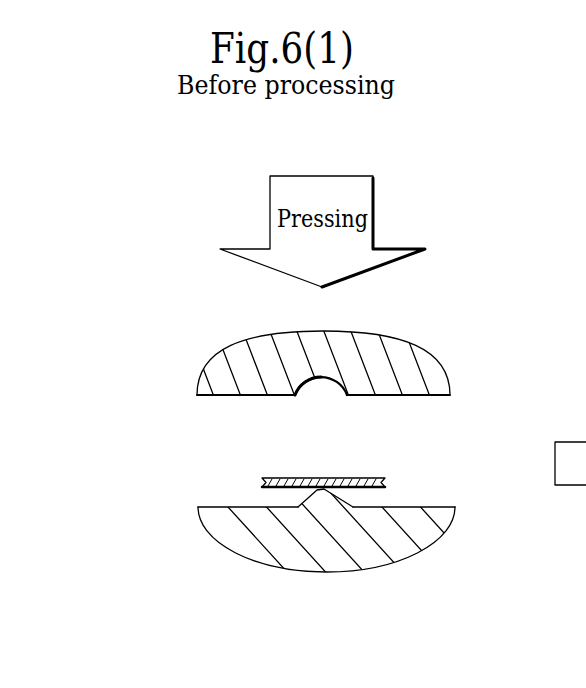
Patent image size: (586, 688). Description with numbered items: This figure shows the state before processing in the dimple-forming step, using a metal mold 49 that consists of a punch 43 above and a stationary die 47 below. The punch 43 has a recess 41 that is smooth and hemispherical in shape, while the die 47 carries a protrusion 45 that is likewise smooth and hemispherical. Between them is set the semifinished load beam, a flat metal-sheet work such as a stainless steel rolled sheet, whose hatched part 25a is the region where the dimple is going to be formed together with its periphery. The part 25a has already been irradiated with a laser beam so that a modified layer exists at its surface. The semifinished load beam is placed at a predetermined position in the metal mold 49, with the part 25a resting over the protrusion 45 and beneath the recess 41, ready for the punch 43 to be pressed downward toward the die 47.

The punch 43 is at (397, 350).
The recess 41 is at (346, 395).
The hatched part 25a is at (318, 486).
The protrusion 45 is at (345, 494).
The stationary die 47 is at (417, 530).
The metal mold 49 is at (533, 330).